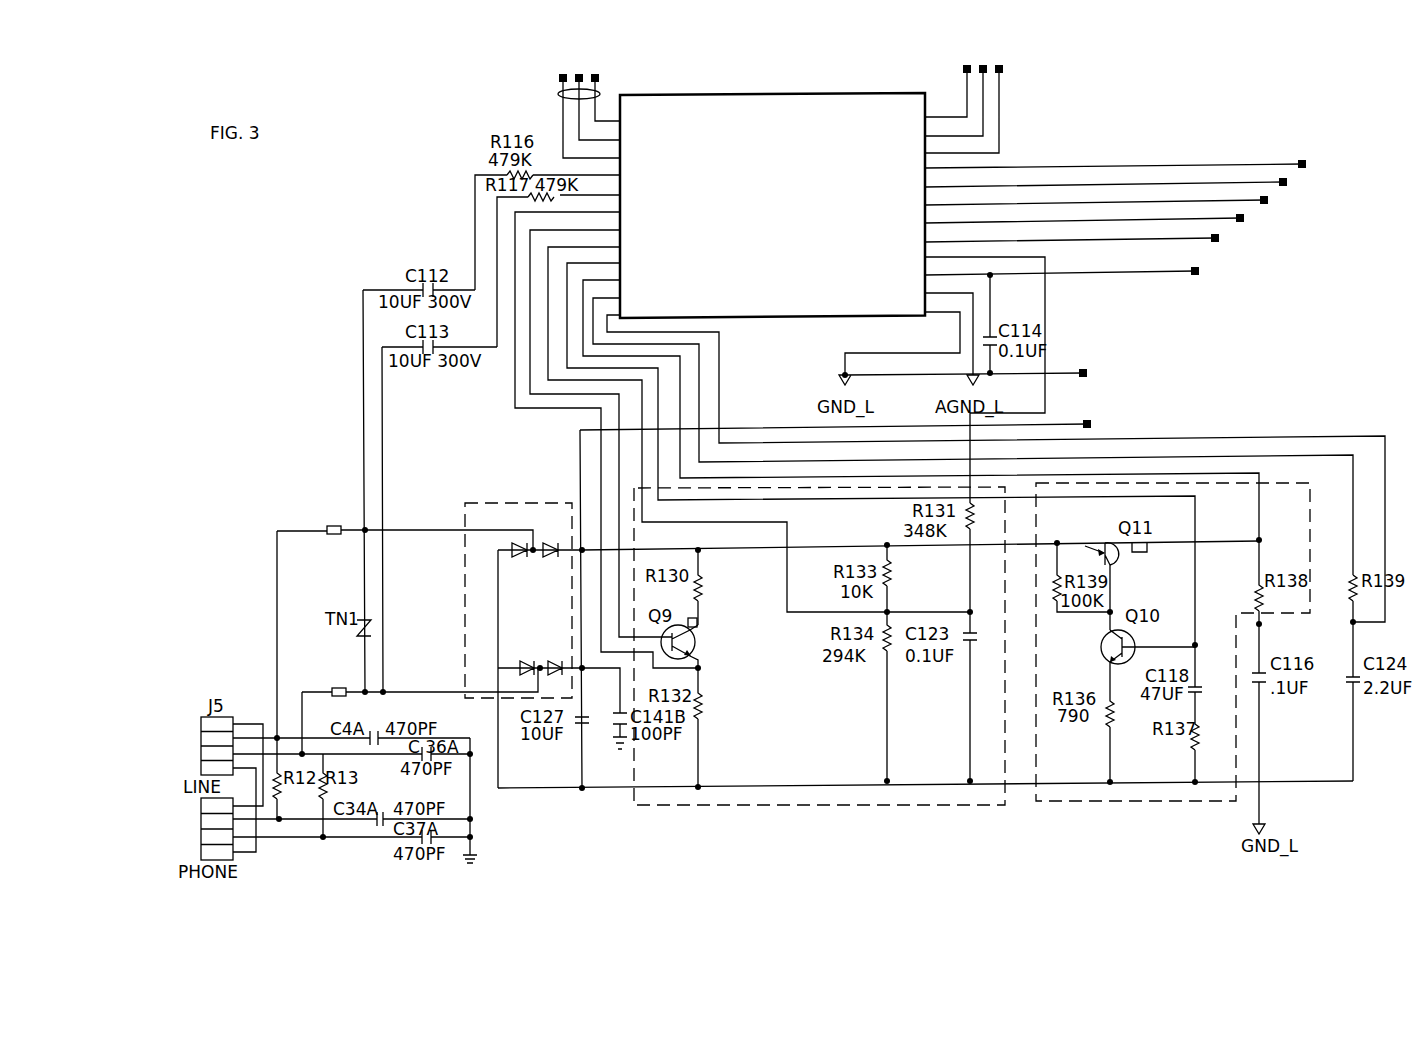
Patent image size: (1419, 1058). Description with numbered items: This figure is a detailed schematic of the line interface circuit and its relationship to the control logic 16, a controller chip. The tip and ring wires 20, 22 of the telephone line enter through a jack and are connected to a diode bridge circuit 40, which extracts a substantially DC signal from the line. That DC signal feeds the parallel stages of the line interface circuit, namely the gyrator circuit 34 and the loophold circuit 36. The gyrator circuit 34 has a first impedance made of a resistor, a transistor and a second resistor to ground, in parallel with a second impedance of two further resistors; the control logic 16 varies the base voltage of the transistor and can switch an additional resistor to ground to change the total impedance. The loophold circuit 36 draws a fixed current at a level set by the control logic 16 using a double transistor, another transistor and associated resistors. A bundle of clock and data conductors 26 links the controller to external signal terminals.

The control logic 16 is at (826, 93).
The tip wire 20 is at (305, 528).
The ring wire 22 is at (305, 692).
The clock and data signal bundle 26 is at (561, 95).
The gyrator circuit 34 is at (721, 806).
The loophold circuit 36 is at (1086, 802).
The diode bridge circuit 40 is at (465, 650).